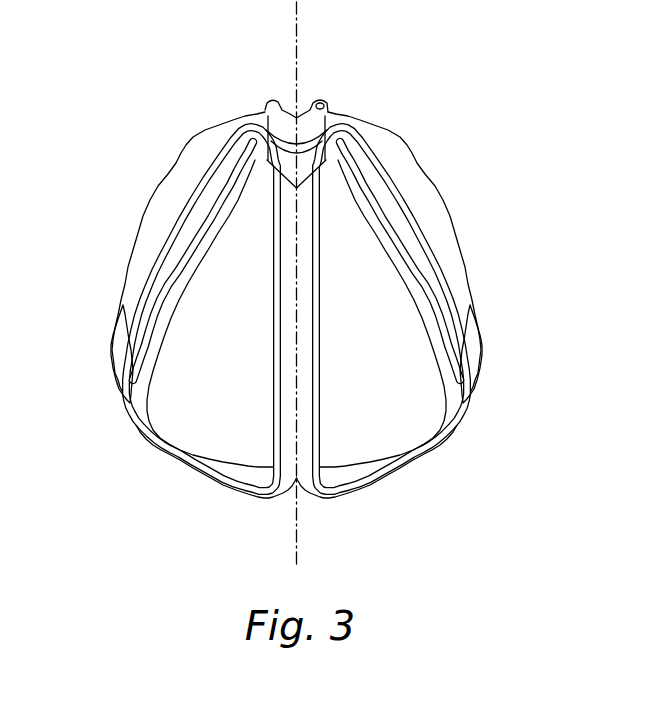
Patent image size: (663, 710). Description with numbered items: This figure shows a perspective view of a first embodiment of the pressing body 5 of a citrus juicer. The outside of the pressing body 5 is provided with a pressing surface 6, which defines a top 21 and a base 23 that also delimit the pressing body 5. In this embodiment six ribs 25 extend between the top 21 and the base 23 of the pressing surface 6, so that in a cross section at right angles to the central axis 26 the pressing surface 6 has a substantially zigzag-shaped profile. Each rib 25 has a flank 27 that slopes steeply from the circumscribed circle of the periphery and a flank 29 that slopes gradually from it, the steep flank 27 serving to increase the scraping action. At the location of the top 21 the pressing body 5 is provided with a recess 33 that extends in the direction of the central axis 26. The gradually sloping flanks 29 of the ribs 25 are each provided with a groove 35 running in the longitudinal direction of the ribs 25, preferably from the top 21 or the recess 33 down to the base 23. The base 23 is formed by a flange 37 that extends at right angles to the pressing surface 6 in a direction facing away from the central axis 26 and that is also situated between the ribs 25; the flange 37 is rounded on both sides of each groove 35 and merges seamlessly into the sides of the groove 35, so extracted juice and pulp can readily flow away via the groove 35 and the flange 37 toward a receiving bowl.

The pressing body 5 is at (117, 69).
The pressing surface 6 is at (441, 162).
The top 21 is at (314, 152).
The base 23 is at (352, 512).
The ribs 25 is at (229, 426).
The central axis 26 is at (297, 18).
The steeply sloping flank 27 is at (167, 192).
The gradually sloping flank 29 is at (428, 222).
The recess 33 is at (266, 120).
The groove 35 is at (133, 365).
The flange 37 is at (175, 445).